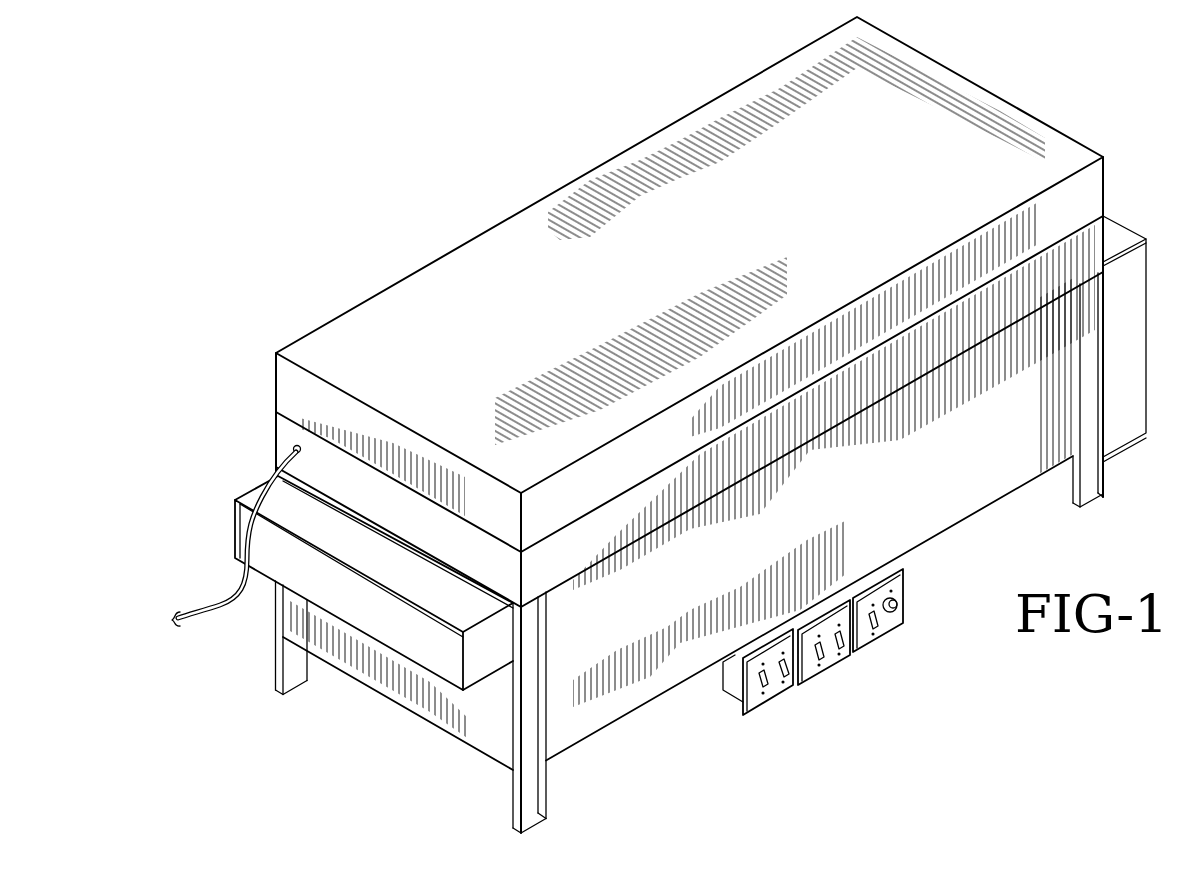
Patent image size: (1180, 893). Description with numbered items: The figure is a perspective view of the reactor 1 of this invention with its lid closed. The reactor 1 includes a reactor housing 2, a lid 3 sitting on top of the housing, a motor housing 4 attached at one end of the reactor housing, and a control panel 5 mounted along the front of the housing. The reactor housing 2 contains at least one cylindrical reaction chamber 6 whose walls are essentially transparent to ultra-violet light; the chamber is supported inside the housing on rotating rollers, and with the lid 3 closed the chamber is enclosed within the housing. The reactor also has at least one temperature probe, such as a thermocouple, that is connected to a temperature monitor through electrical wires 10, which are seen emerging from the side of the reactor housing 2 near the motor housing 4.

The reactor 1 is at (362, 141).
The reactor housing 2 is at (648, 680).
The lid 3 is at (1061, 150).
The motor housing 4 is at (262, 492).
The control panel 5 is at (863, 637).
The cylindrical reaction chamber 6 is at (1010, 514).
The electrical wires 10 is at (228, 600).